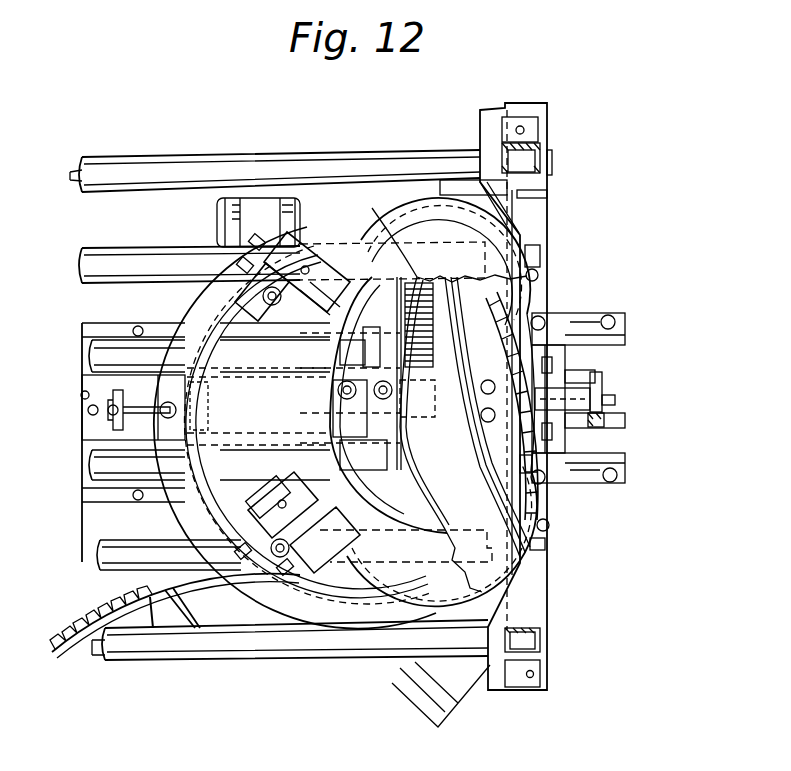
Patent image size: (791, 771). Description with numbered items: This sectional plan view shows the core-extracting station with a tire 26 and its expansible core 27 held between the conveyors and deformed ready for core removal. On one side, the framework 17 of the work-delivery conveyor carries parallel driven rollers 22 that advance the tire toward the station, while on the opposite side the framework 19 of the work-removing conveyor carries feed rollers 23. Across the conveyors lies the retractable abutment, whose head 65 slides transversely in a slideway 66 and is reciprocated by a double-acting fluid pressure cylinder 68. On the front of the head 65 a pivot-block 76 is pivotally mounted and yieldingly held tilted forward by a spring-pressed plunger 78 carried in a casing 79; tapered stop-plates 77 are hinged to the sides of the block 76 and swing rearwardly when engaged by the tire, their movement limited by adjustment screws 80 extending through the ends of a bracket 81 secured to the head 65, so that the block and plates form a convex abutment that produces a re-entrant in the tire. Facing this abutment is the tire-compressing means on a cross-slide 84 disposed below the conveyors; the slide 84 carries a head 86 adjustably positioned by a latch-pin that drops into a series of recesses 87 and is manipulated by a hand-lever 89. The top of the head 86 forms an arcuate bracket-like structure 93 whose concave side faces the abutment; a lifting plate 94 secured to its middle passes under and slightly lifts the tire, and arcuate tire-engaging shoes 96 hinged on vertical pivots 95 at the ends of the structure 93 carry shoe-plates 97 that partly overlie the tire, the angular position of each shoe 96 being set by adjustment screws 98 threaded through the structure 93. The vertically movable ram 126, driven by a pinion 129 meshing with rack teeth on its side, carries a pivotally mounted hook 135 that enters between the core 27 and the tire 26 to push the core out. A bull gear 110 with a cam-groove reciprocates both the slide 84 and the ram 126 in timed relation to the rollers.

The framework of work-delivery conveyor 17 is at (492, 113).
The framework of work-removing conveyor 19 is at (500, 697).
The driven rollers 22 is at (138, 262).
The feed rollers 23 is at (113, 461).
The tire 26 is at (512, 233).
The expansible core 27 is at (532, 567).
The head 65 is at (540, 384).
The slideway 66 is at (625, 346).
The double-acting fluid pressure cylinder 68 is at (600, 420).
The pivot-block 76 is at (548, 441).
The stop-plates 77 is at (558, 292).
The spring-pressed plunger 78 is at (588, 428).
The casing 79 is at (580, 396).
The adjustment screws 80 is at (545, 322).
The bracket 81 is at (548, 470).
The cross-slide 84 is at (90, 380).
The head 86 is at (166, 430).
The recesses or apertures 87 is at (85, 412).
The hand-lever 89 is at (140, 418).
The arcuate bracket-like formation 93 is at (202, 465).
The lifting plate 94 is at (352, 425).
The vertical pivots 95 is at (250, 246).
The tire-engaging shoes 96 is at (333, 262).
The shoe-plates 97 is at (308, 250).
The adjustment screws 98 is at (262, 240).
The bull gear 110 is at (64, 658).
The ram 126 is at (398, 410).
The pinion 129 is at (378, 212).
The hook 135 is at (382, 387).